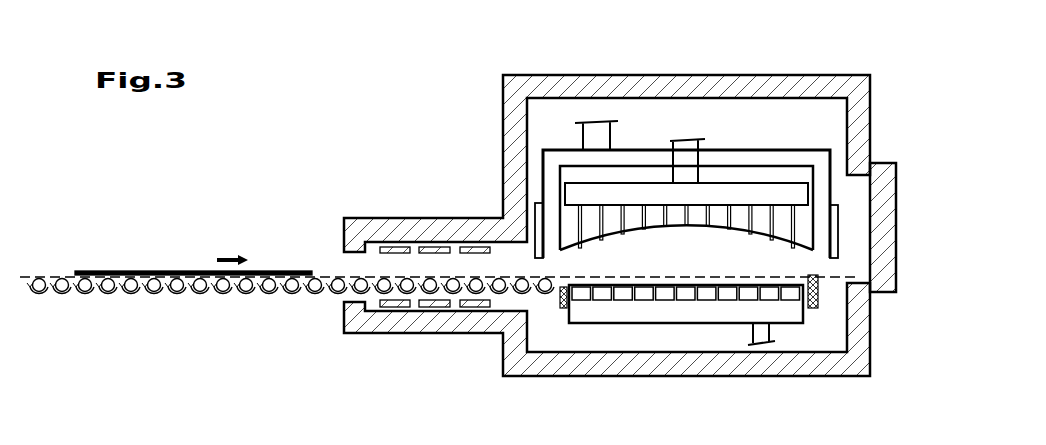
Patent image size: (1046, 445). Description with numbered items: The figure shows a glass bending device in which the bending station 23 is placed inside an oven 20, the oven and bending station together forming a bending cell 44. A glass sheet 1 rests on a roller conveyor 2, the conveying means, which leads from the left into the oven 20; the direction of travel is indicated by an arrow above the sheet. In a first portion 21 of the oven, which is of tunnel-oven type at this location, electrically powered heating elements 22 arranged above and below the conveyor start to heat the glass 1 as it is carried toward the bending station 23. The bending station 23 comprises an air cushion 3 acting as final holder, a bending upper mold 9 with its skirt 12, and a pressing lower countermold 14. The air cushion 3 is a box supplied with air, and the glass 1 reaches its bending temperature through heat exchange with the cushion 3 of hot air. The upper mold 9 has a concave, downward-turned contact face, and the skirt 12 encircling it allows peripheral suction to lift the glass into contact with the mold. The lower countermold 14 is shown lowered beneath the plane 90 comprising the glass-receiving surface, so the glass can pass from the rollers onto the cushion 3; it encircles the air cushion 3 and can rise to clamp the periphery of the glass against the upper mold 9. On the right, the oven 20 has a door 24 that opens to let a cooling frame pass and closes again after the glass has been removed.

The glass sheet 1 is at (170, 271).
The roller conveyor 2 is at (197, 292).
The air cushion 3 is at (680, 292).
The bending upper mold 9 is at (632, 215).
The skirt 12 is at (535, 212).
The lower countermold 14 is at (562, 308).
The oven 20 is at (573, 77).
The first portion of the oven 21 is at (498, 342).
The heating elements 22 is at (438, 247).
The bending station 23 is at (735, 122).
The door 24 is at (885, 292).
The bending cell 44 is at (834, 58).
The plane 90 is at (655, 277).